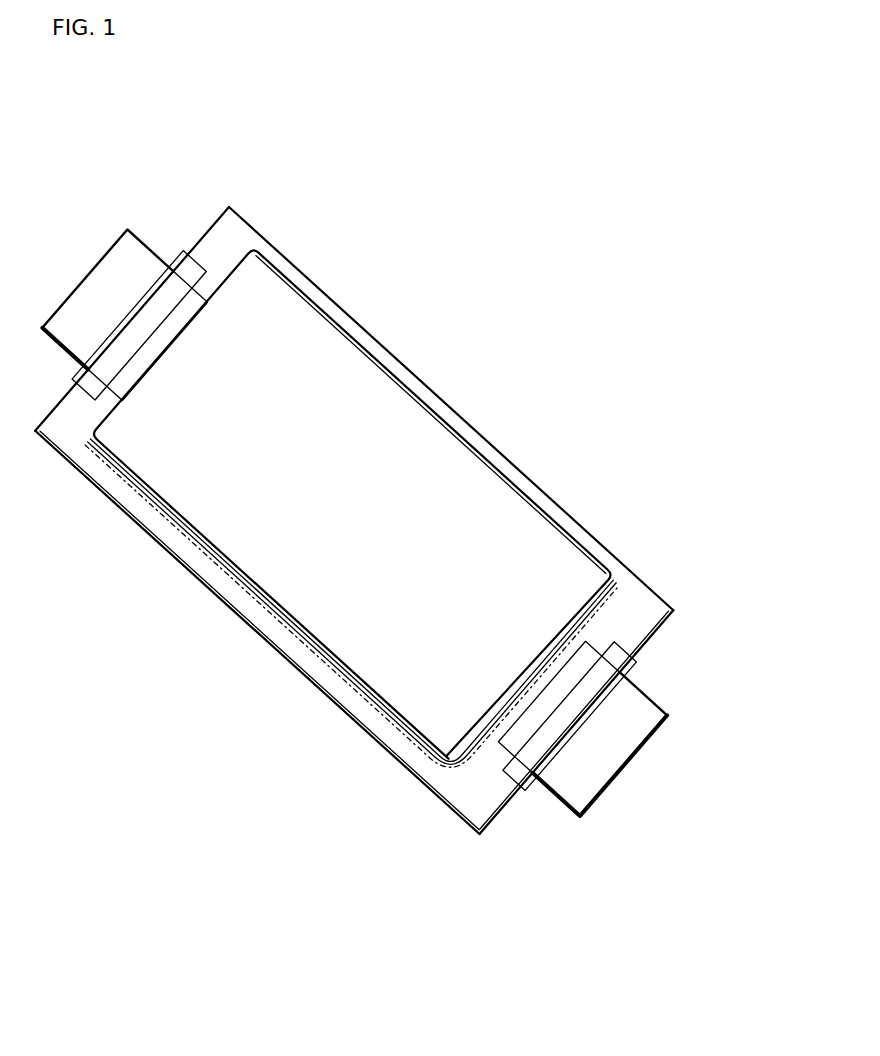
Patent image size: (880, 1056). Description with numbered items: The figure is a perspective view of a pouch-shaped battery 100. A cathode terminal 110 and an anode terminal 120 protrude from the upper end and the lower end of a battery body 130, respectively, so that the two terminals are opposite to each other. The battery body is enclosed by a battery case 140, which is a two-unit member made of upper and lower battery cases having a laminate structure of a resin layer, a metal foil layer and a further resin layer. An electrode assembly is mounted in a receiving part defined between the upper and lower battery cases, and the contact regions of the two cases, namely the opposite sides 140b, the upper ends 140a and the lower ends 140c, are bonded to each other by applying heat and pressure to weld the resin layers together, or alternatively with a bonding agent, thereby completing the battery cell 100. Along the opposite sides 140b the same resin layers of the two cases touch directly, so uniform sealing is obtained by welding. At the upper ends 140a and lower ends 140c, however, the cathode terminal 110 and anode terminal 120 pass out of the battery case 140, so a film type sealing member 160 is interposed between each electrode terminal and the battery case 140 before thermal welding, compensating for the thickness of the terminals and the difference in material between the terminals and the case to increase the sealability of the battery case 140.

The pouch-shaped battery 100 is at (94, 143).
The cathode terminal 110 is at (103, 284).
The anode terminal 120 is at (627, 763).
The battery body 130 is at (429, 427).
The battery case 140 is at (655, 592).
The upper ends 140a is at (230, 233).
The opposite sides 140b is at (362, 718).
The lower ends 140c is at (490, 795).
The film type sealing member 160 is at (637, 662).